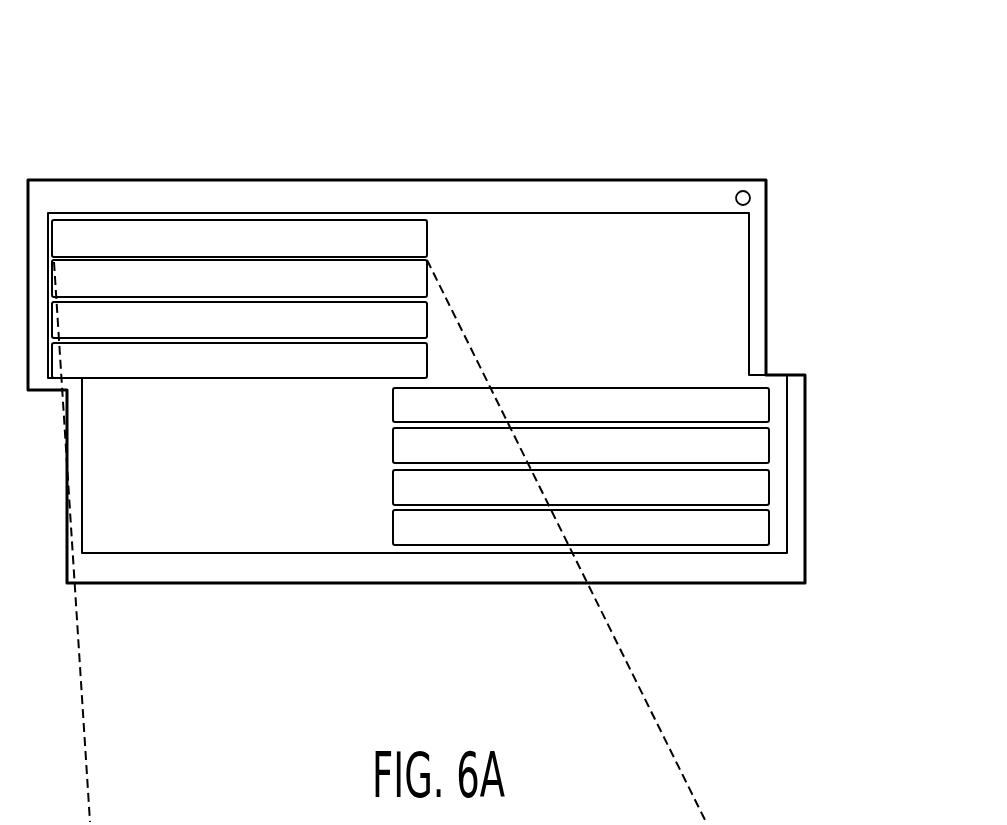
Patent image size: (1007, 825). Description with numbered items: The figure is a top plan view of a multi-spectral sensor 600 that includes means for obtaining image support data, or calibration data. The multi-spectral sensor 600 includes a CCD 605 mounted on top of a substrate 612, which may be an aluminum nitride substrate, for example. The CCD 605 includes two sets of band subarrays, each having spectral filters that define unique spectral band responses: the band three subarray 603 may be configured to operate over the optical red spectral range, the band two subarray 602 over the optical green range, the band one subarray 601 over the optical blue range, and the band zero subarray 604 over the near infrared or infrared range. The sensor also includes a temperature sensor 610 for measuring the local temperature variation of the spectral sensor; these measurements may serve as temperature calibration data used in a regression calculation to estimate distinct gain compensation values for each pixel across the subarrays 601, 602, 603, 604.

The multi-spectral sensor 600 is at (365, 618).
The band 1 subarray 601 is at (713, 600).
The band 2 subarray 602 is at (440, 607).
The band 3 subarray 603 is at (658, 409).
The band 0 subarray 604 is at (812, 653).
The CCD 605 is at (571, 300).
The temperature sensor 610 is at (743, 191).
The substrate 612 is at (490, 190).